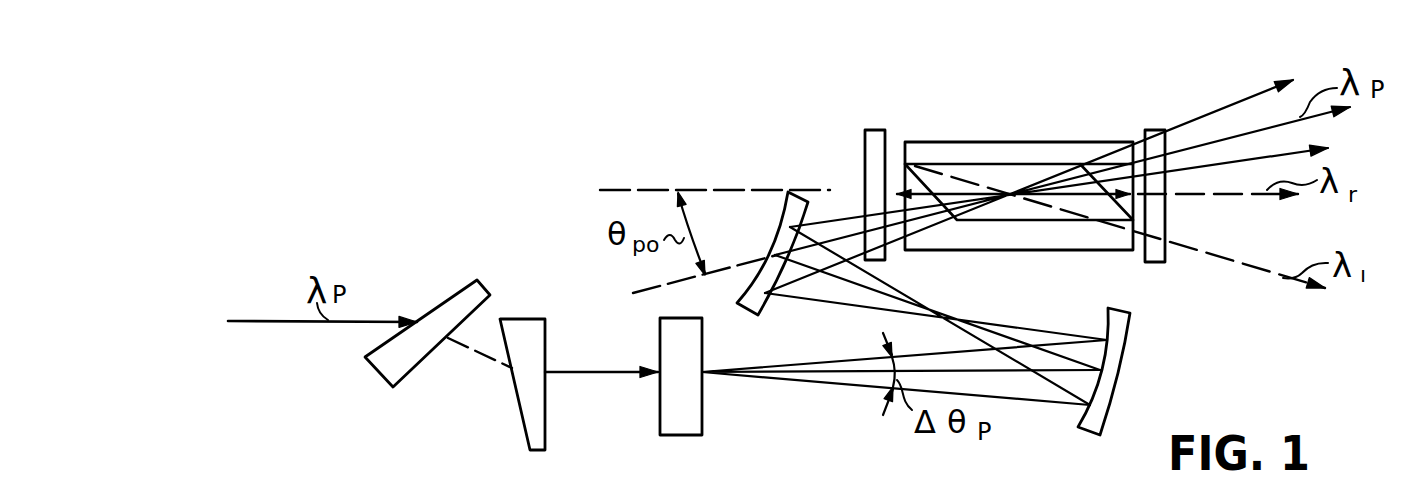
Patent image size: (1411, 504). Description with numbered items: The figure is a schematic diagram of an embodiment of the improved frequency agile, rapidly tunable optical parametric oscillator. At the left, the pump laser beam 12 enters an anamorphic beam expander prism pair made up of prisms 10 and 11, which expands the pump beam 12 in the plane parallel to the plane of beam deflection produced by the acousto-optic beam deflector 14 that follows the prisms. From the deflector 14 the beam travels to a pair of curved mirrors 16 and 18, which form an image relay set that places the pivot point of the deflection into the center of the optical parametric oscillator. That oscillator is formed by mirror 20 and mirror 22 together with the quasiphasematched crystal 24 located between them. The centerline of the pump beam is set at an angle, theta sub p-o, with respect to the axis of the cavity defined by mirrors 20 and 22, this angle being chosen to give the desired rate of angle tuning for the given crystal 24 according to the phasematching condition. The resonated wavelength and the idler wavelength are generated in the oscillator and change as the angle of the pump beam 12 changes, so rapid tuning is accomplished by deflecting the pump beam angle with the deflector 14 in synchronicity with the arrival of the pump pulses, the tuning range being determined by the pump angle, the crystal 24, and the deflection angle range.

The prism 10 is at (447, 300).
The prism 11 is at (529, 318).
The pump laser beam 12 is at (267, 321).
The acousto-optic beam deflector 14 is at (660, 405).
The curved mirror 16 is at (1117, 375).
The curved mirror 18 is at (772, 213).
The mirror 20 is at (875, 130).
The mirror 22 is at (1150, 130).
The quasiphasematched crystal 24 is at (1030, 142).